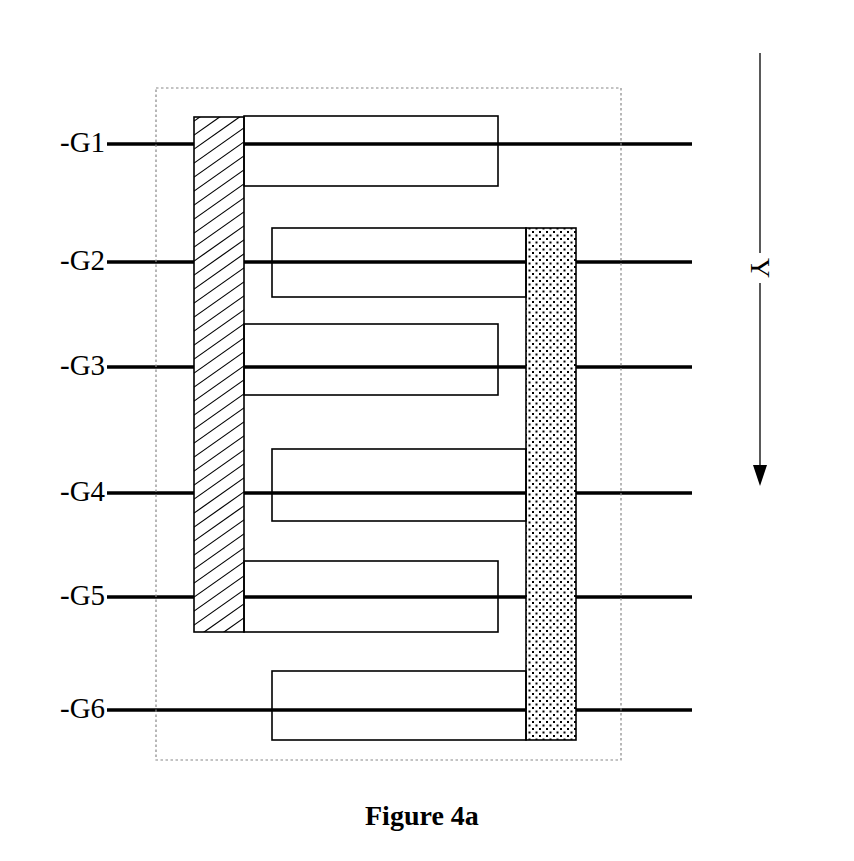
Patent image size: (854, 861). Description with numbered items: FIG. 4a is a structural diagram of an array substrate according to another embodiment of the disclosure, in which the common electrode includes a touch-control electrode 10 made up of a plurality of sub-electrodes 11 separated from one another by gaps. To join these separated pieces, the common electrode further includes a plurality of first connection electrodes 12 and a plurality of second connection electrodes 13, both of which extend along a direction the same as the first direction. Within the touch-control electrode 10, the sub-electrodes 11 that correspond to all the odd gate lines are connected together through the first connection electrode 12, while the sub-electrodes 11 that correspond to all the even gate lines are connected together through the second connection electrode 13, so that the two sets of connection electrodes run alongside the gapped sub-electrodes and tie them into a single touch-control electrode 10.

The touch-control electrode 10 is at (368, 88).
The sub-electrodes 11 is at (498, 116).
The first connection electrode 12 is at (215, 118).
The second connection electrode 13 is at (567, 260).